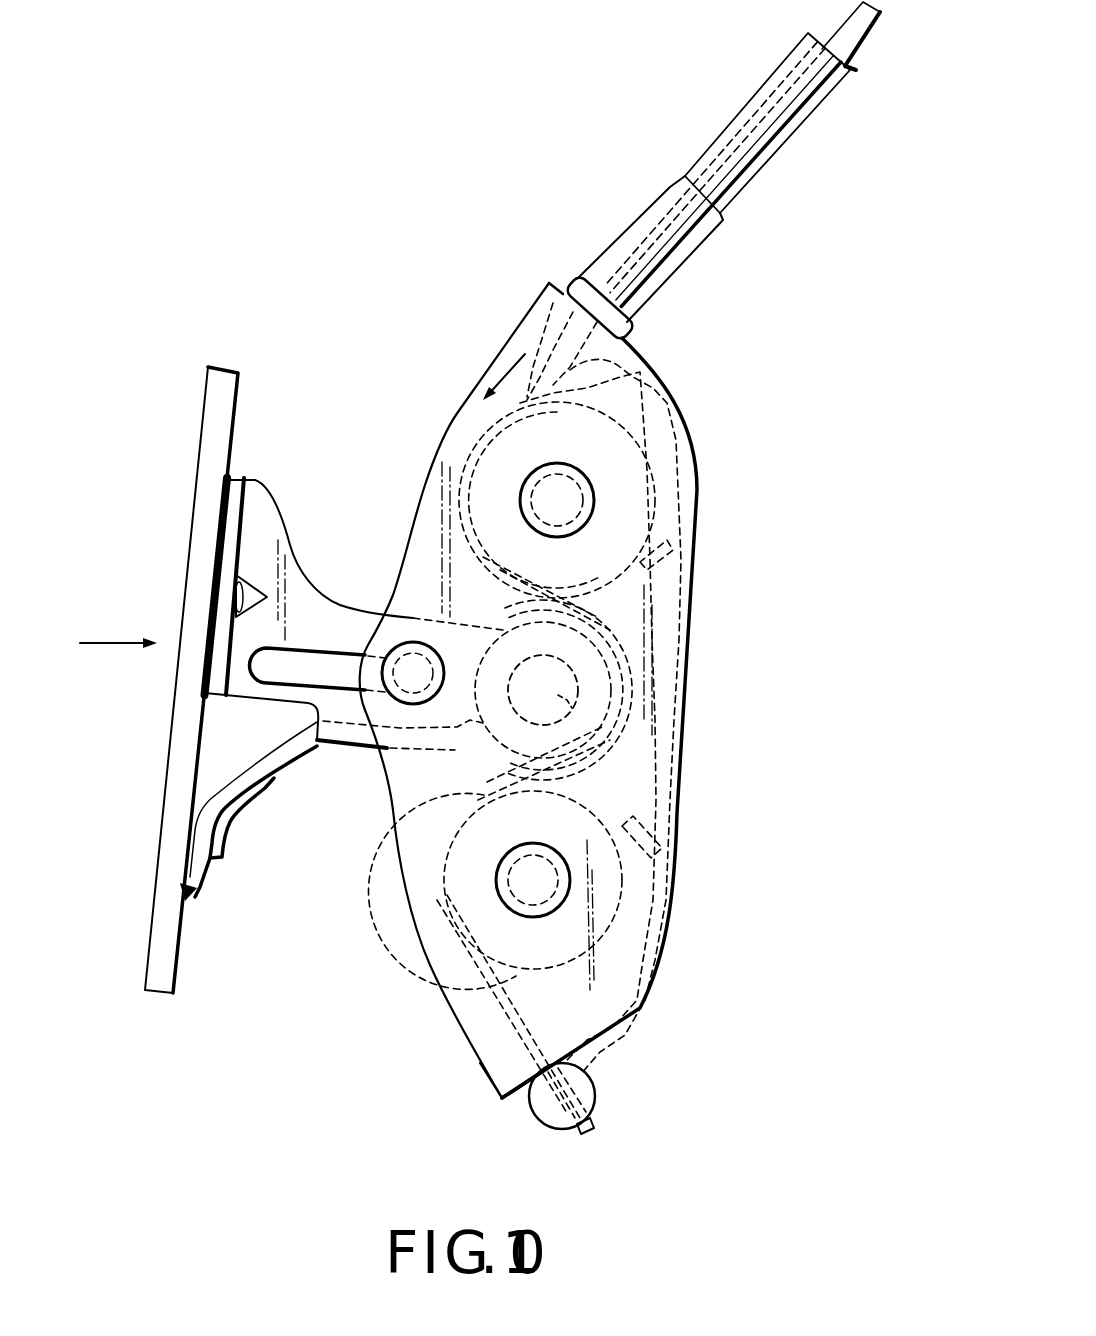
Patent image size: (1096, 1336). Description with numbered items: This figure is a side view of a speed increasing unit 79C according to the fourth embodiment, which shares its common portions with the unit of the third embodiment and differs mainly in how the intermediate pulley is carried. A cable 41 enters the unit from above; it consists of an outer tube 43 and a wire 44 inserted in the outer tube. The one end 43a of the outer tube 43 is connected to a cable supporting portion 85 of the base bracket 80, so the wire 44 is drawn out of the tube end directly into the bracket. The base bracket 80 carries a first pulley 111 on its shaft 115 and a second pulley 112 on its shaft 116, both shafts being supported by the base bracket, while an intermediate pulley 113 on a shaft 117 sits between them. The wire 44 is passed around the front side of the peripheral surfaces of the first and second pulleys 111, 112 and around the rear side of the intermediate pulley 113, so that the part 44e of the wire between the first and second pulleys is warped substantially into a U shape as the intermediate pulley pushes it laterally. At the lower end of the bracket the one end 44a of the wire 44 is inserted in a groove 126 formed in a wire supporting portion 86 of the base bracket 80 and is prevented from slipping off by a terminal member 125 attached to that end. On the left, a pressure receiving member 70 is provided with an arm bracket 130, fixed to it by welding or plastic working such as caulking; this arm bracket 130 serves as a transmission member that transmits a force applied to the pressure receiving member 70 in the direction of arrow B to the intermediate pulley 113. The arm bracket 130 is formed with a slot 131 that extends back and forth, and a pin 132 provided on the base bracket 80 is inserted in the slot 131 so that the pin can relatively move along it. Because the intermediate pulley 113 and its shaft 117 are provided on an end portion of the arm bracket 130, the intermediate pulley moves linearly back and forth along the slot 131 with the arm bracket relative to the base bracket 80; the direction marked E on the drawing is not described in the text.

The speed increasing unit 79C is at (433, 158).
The cable 41 is at (742, 97).
The outer tube 43 is at (792, 134).
The one end of the outer tube 43a is at (632, 321).
The wire 44 is at (637, 376).
The one end of the wire 44a is at (596, 1073).
The part of the wire 44e is at (602, 766).
The pressure receiving member 70 is at (152, 906).
The base bracket 80 is at (695, 609).
The cable supporting portion 85 is at (570, 283).
The wire supporting portion 86 is at (520, 1095).
The first pulley 111 is at (641, 473).
The second pulley 112 is at (674, 923).
The intermediate pulley 113 is at (586, 693).
The shaft of the first pulley 115 is at (596, 506).
The shaft of the second pulley 116 is at (550, 890).
The shaft of the intermediate pulley 117 is at (594, 713).
The terminal member 125 is at (595, 1104).
The groove 126 is at (517, 1068).
The arm bracket 130 is at (330, 627).
The slot 131 is at (335, 680).
The pin 132 is at (415, 660).
The direction E is at (493, 393).
The arrow B is at (118, 608).